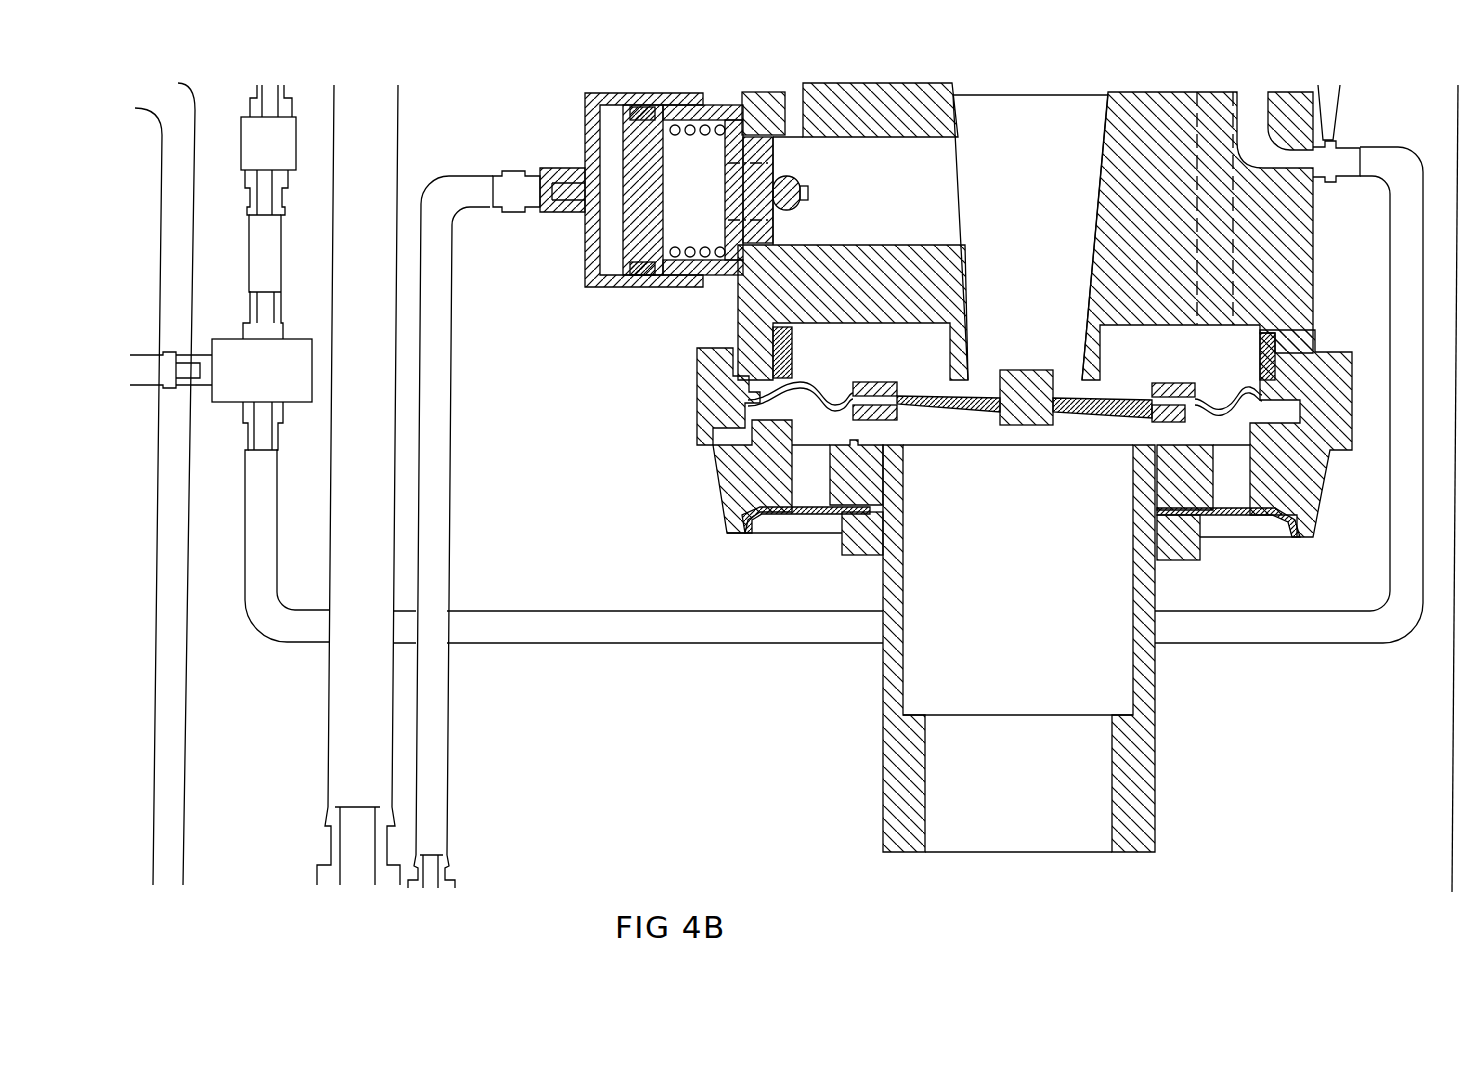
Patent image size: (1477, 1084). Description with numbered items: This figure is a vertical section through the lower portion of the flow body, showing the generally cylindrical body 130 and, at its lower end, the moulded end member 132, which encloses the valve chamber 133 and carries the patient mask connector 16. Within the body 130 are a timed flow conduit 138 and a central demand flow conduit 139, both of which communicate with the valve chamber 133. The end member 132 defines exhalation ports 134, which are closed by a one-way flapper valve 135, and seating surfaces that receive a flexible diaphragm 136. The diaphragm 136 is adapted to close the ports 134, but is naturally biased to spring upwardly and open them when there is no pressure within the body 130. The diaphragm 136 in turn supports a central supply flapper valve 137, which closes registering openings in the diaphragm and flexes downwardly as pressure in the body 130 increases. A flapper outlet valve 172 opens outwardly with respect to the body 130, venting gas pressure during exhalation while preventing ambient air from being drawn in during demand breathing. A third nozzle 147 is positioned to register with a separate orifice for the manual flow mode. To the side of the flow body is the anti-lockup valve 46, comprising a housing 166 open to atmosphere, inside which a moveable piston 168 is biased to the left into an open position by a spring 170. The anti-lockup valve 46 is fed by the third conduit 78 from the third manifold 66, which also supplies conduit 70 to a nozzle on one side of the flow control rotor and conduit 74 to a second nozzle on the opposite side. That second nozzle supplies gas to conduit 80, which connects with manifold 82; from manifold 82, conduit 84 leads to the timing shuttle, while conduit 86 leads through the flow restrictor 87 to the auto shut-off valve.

The patient mask connector 16 is at (880, 780).
The anti-lockup valve 46 is at (584, 311).
The third manifold 66 is at (173, 824).
The conduit 70 is at (348, 747).
The conduit 74 is at (1462, 745).
The third conduit 78 is at (433, 777).
The conduit 80 is at (667, 635).
The manifold 82 is at (235, 390).
The conduit 84 is at (147, 367).
The conduit 86 is at (285, 103).
The flow restrictor 87 is at (287, 164).
The cylindrical body 130 is at (1253, 205).
The moulded end member 132 is at (737, 510).
The valve chamber 133 is at (710, 377).
The exhalation ports 134 is at (808, 482).
The one-way flapper valve 135 is at (800, 510).
The flexible diaphragm 136 is at (745, 410).
The central supply flapper valve 137 is at (967, 417).
The timed flow conduit 138 is at (802, 143).
The central demand flow conduit 139 is at (1060, 203).
The third nozzle 147 is at (1257, 122).
The housing 166 is at (590, 104).
The moveable piston 168 is at (636, 173).
The spring 170 is at (620, 203).
The flapper outlet valve 172 is at (640, 250).